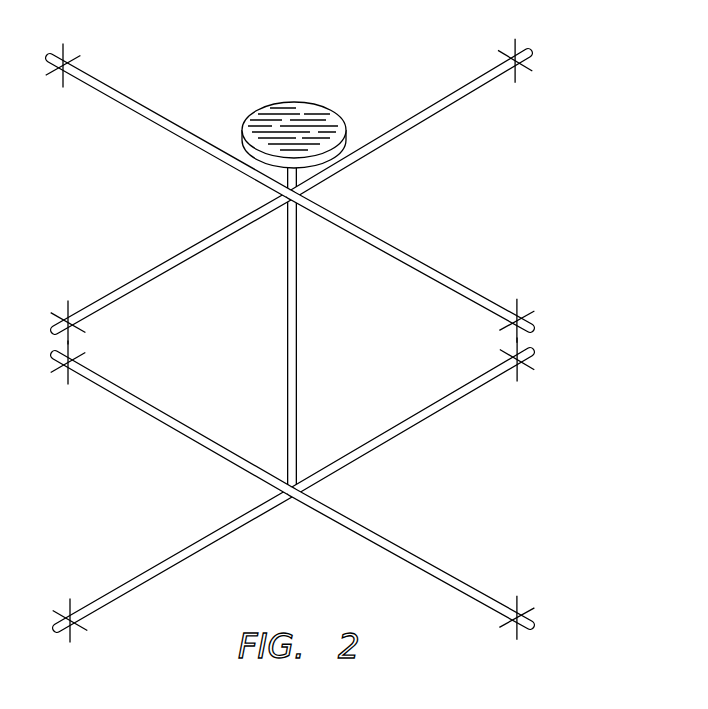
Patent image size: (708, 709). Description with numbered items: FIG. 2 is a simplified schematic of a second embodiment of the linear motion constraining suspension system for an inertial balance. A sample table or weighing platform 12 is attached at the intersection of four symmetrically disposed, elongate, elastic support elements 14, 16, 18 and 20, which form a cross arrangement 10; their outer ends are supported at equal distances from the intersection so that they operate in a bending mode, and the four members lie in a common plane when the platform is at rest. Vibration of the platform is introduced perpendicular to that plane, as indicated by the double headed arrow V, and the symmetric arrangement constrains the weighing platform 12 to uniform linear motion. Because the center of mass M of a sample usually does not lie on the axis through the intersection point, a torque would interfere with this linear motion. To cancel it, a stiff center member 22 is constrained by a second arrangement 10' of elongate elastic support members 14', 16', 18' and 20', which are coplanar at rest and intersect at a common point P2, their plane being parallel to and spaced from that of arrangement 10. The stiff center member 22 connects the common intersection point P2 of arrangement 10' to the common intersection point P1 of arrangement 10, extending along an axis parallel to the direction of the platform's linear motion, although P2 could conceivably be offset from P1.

The cross arrangement 10 is at (335, 193).
The second arrangement 10' is at (329, 490).
The weighing platform 12 is at (258, 125).
The support element 14 is at (410, 107).
The support element 16 is at (411, 268).
The support element 18 is at (172, 269).
The support element 20 is at (169, 107).
The stiff center member 22 is at (287, 327).
The support member 14' is at (412, 415).
The support member 16' is at (412, 565).
The support member 18' is at (173, 567).
The support member 20' is at (172, 417).
The common intersection point P1 is at (297, 200).
The common intersection point P2 is at (297, 487).
The center of mass M is at (332, 117).
The double headed arrow V is at (293, 507).